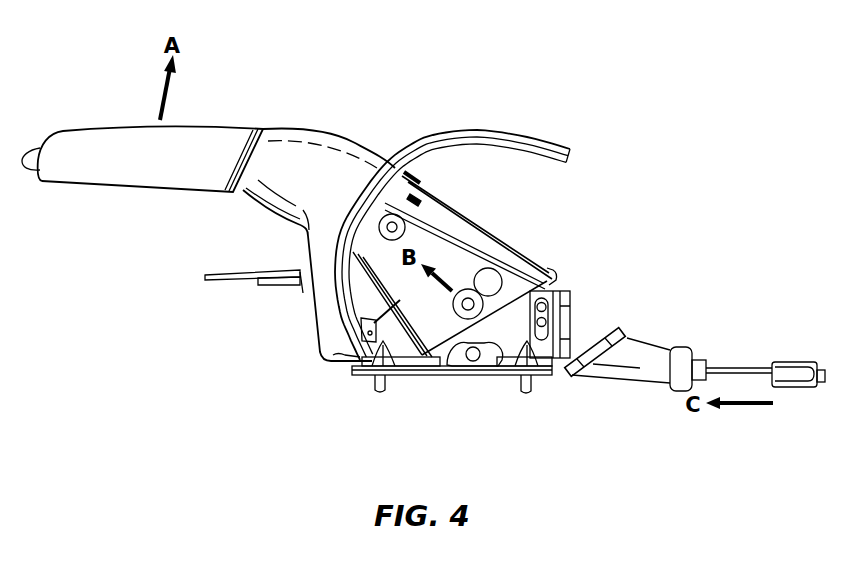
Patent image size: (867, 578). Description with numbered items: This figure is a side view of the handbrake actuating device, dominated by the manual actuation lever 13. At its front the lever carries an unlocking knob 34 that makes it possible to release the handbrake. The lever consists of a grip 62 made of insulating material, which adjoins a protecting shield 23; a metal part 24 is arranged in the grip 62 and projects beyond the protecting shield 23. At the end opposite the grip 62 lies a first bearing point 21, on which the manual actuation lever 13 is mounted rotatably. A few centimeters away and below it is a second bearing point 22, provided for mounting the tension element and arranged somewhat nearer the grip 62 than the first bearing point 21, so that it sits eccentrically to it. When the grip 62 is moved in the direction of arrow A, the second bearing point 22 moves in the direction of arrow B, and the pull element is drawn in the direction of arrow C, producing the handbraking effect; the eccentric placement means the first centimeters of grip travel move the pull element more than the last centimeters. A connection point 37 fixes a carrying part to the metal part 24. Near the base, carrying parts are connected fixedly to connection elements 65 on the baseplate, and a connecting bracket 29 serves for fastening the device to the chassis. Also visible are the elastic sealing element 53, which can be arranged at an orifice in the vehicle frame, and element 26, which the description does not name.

The manual actuation lever 13 is at (131, 193).
The first bearing point 21 is at (497, 278).
The second bearing point 22 is at (468, 319).
The protecting shield 23 is at (508, 130).
The metal part 24 is at (483, 238).
The base plate 26 is at (420, 375).
The connecting bracket 29 is at (244, 281).
The unlocking knob 34 is at (33, 147).
The connection point 37 is at (392, 222).
The elastic sealing element 53 is at (632, 372).
The grip 62 is at (214, 130).
The connection elements 65 is at (376, 386).